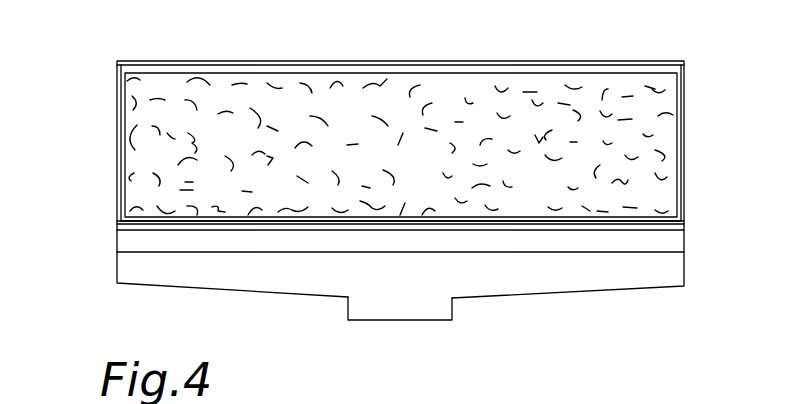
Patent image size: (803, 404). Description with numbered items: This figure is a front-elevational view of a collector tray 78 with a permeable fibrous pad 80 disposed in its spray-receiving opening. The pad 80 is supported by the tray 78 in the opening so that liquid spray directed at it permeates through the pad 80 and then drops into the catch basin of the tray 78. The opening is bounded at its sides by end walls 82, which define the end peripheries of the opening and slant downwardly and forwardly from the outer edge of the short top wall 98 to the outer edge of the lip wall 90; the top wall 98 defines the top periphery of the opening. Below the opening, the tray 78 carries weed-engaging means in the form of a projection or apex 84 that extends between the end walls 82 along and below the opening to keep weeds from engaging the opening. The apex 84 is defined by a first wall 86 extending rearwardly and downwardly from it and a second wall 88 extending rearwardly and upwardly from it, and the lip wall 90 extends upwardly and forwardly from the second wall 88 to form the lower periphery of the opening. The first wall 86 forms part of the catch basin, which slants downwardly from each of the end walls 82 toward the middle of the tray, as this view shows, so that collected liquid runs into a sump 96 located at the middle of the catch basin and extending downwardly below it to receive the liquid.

The collector tray 78 is at (700, 190).
The fibrous pad 80 is at (650, 108).
The end walls 82 is at (117, 152).
The projection or apex 84 is at (572, 252).
The first wall 86 is at (207, 272).
The second wall 88 is at (515, 243).
The lip wall 90 is at (400, 218).
The sump 96 is at (378, 320).
The top wall 98 is at (381, 33).